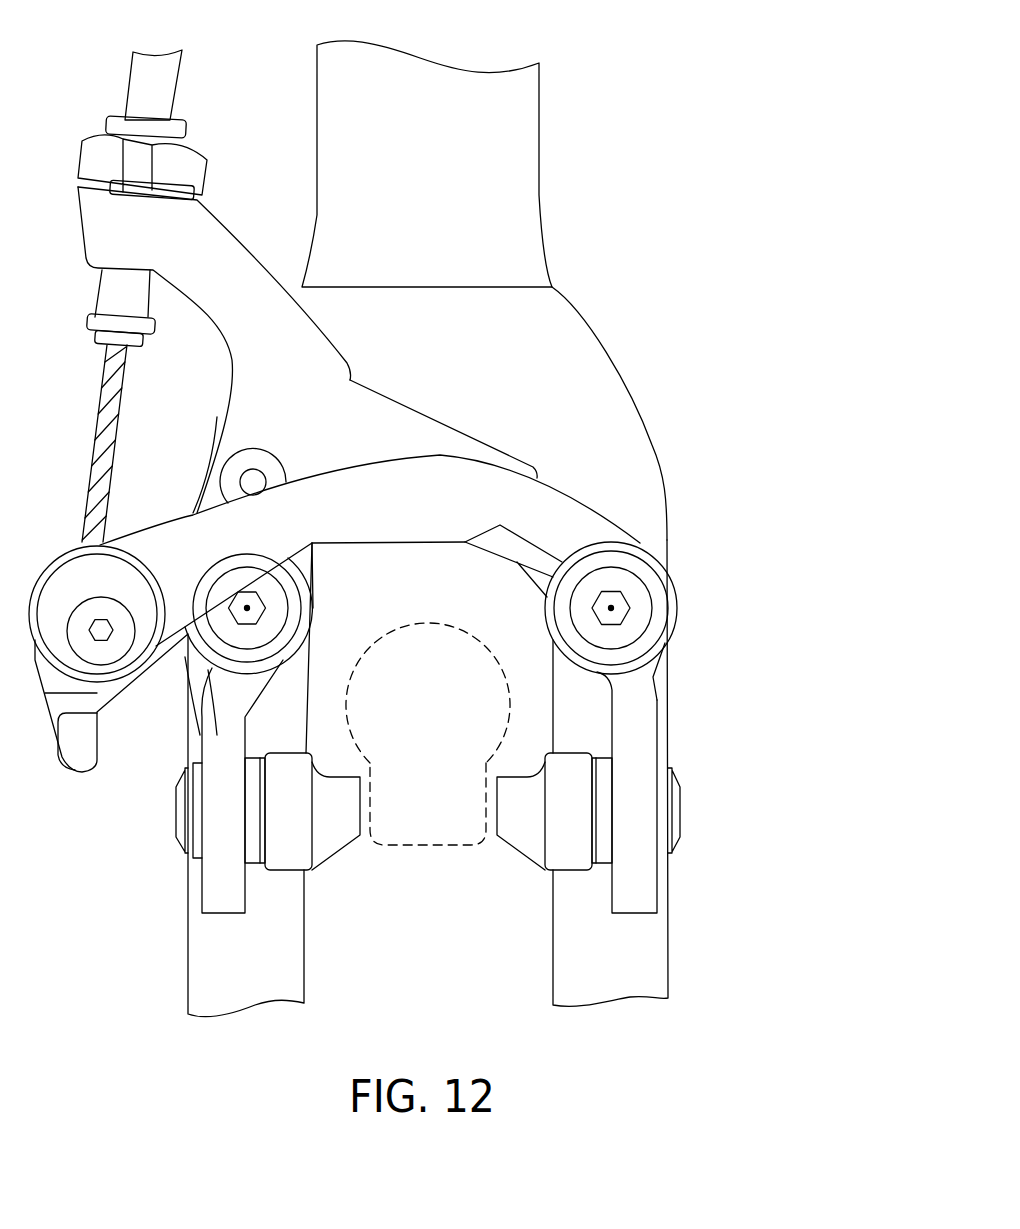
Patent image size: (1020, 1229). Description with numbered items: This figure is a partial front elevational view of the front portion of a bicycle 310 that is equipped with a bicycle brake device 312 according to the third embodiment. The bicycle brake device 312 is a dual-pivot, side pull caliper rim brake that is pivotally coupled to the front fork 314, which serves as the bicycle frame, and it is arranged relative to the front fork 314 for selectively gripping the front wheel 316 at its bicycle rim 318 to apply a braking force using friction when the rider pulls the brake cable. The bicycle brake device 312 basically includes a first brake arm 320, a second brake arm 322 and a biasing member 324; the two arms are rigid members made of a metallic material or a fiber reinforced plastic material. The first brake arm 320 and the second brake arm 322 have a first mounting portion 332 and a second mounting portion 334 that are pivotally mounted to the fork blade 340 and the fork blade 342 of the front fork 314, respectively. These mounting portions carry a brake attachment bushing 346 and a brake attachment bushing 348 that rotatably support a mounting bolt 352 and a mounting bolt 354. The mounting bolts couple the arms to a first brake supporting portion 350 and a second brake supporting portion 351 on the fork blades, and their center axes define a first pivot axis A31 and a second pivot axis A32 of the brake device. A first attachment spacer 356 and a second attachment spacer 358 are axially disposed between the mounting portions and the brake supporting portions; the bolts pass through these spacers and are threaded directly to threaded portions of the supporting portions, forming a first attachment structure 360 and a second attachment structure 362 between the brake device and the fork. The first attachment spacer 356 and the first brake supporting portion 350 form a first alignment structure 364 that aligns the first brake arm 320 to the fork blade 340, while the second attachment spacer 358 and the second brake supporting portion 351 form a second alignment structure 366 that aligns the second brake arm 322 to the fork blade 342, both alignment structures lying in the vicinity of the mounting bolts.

The bicycle 310 is at (637, 162).
The bicycle brake device 312 is at (428, 385).
The front fork 314 is at (660, 370).
The front wheel 316 is at (448, 627).
The bicycle rim 318 is at (430, 846).
The first brake arm 320 is at (495, 490).
The second brake arm 322 is at (297, 363).
The biasing member 324 is at (468, 417).
The first mounting portion 332 is at (678, 563).
The second mounting portion 334 is at (328, 568).
The fork blade 340 is at (627, 960).
The fork blade 342 is at (232, 965).
The brake attachment bushing 346 is at (638, 647).
The brake attachment bushing 348 is at (265, 653).
The first brake supporting portion 350 is at (647, 533).
The second brake supporting portion 351 is at (302, 547).
The mounting bolt 352 is at (638, 612).
The mounting bolt 354 is at (275, 602).
The first attachment spacer 356 is at (685, 593).
The second attachment spacer 358 is at (177, 655).
The first attachment structure 360 is at (690, 707).
The second attachment structure 362 is at (172, 722).
The first alignment structure 364 is at (715, 642).
The second alignment structure 366 is at (315, 655).
The first pivot axis A31 is at (609, 609).
The second pivot axis A32 is at (249, 609).